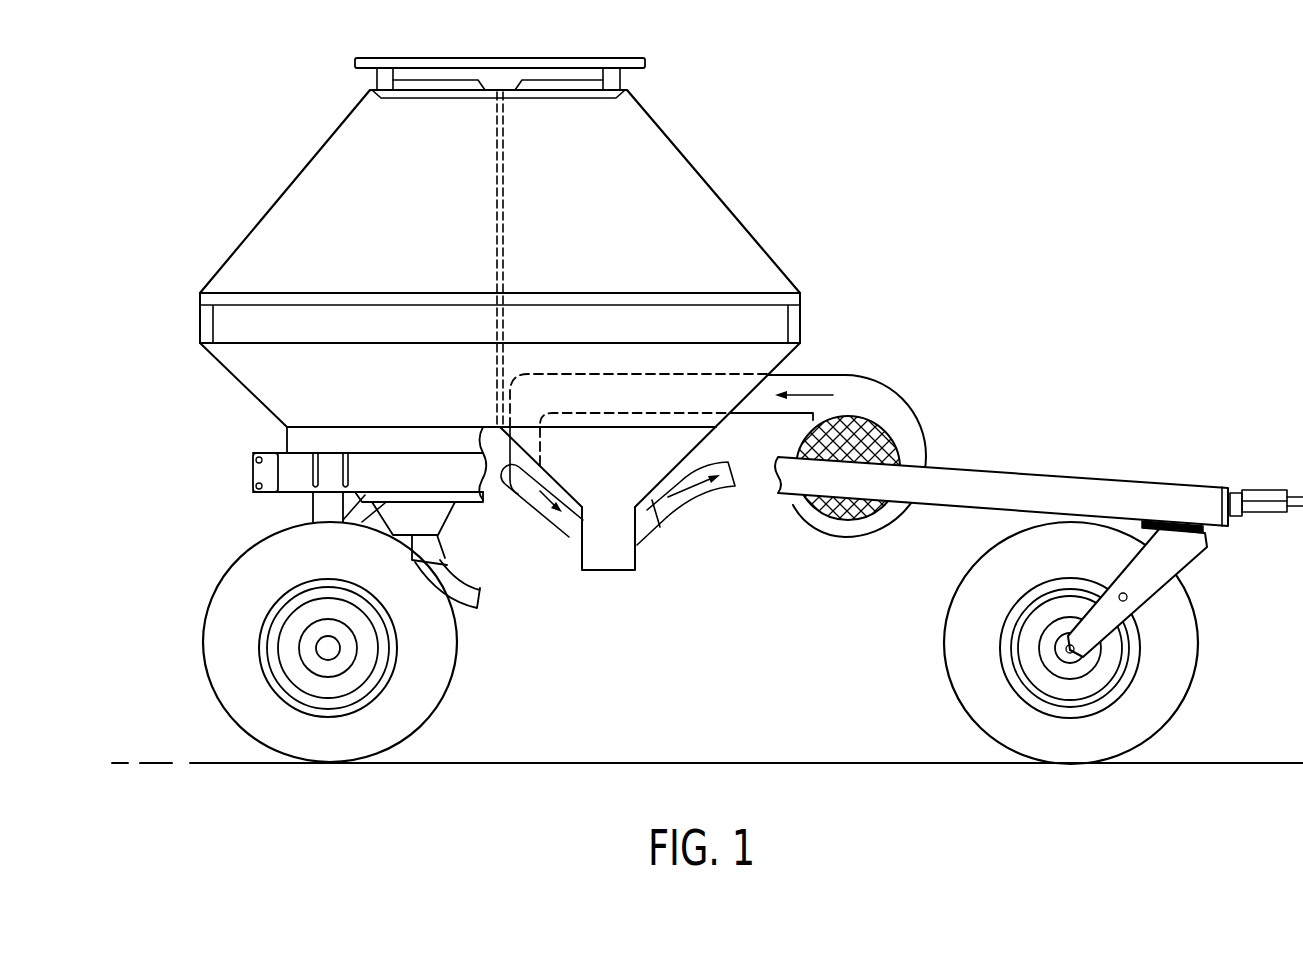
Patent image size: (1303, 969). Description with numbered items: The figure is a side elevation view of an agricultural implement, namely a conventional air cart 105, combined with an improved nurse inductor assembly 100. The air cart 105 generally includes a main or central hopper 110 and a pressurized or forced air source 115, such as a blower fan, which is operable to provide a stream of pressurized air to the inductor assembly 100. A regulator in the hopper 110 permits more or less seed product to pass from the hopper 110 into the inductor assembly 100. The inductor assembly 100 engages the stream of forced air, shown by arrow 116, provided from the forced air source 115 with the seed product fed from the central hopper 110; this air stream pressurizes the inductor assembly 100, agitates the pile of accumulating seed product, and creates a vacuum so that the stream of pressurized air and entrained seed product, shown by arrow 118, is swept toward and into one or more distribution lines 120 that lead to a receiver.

The nurse inductor assembly 100 is at (603, 592).
The air cart 105 is at (802, 208).
The central hopper 110 is at (663, 197).
The forced air source 115 is at (918, 383).
The arrow indicating stream of forced air 116 is at (810, 390).
The arrow indicating stream of pressurized air and entrained seed product 118 is at (700, 467).
The distribution line 120 is at (697, 493).